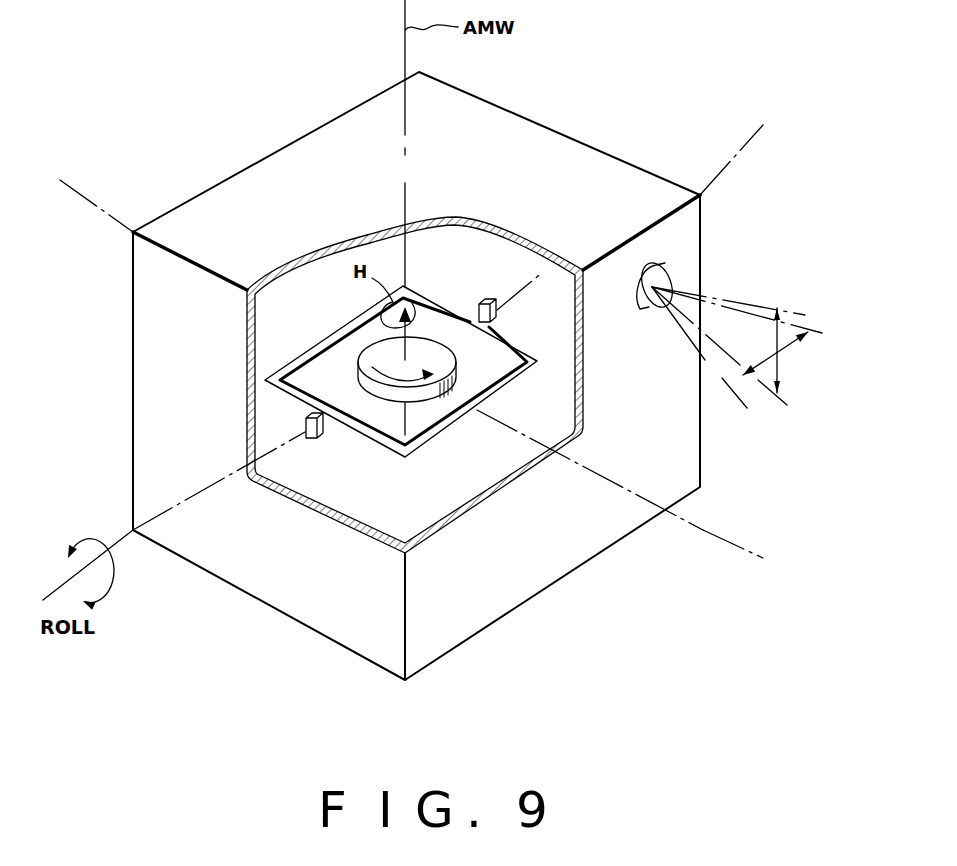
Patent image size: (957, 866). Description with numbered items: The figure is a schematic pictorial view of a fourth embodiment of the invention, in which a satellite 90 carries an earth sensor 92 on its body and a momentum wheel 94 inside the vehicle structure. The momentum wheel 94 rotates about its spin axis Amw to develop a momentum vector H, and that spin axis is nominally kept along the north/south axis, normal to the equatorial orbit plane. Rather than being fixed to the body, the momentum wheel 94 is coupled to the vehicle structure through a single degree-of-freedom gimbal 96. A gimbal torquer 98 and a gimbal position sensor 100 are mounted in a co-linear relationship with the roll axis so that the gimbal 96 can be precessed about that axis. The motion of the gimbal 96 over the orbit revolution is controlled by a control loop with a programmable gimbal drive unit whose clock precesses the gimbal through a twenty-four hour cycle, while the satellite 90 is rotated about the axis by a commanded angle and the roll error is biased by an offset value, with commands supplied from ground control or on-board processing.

The satellite 90 is at (576, 119).
The earth sensor 92 is at (660, 270).
The momentum wheel 94 is at (377, 350).
The single degree-of-freedom gimbal 96 is at (432, 305).
The gimbal torquer 98 is at (497, 317).
The gimbal position sensor 100 is at (318, 439).